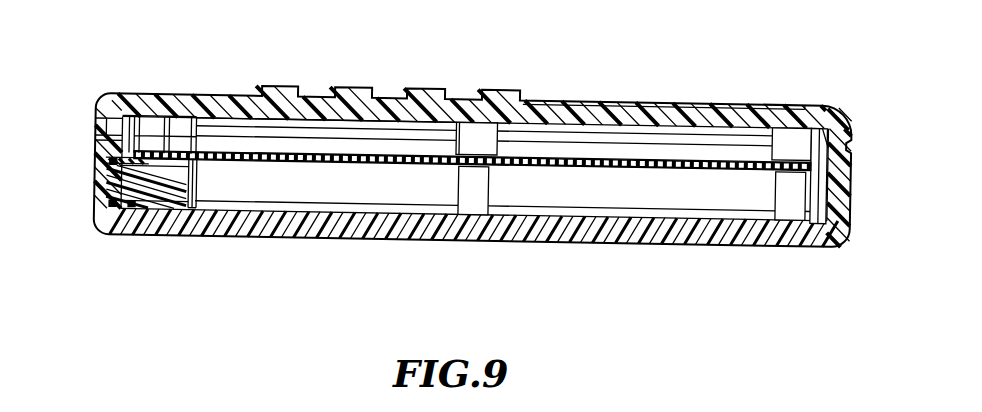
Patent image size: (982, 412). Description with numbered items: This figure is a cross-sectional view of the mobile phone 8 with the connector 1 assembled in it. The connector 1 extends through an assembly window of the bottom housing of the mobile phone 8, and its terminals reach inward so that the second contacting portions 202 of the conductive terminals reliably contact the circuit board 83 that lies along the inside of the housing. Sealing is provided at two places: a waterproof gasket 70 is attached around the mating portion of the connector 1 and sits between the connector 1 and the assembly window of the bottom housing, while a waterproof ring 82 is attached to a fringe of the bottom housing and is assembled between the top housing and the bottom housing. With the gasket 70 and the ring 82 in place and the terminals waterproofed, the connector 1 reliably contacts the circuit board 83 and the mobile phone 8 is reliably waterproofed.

The mobile phone 8 is at (692, 90).
The waterproof ring 82 is at (100, 108).
The second contacting portion 202 is at (162, 152).
The circuit board 83 is at (316, 157).
The waterproof gasket 70 is at (102, 219).
The connector 1 is at (165, 238).